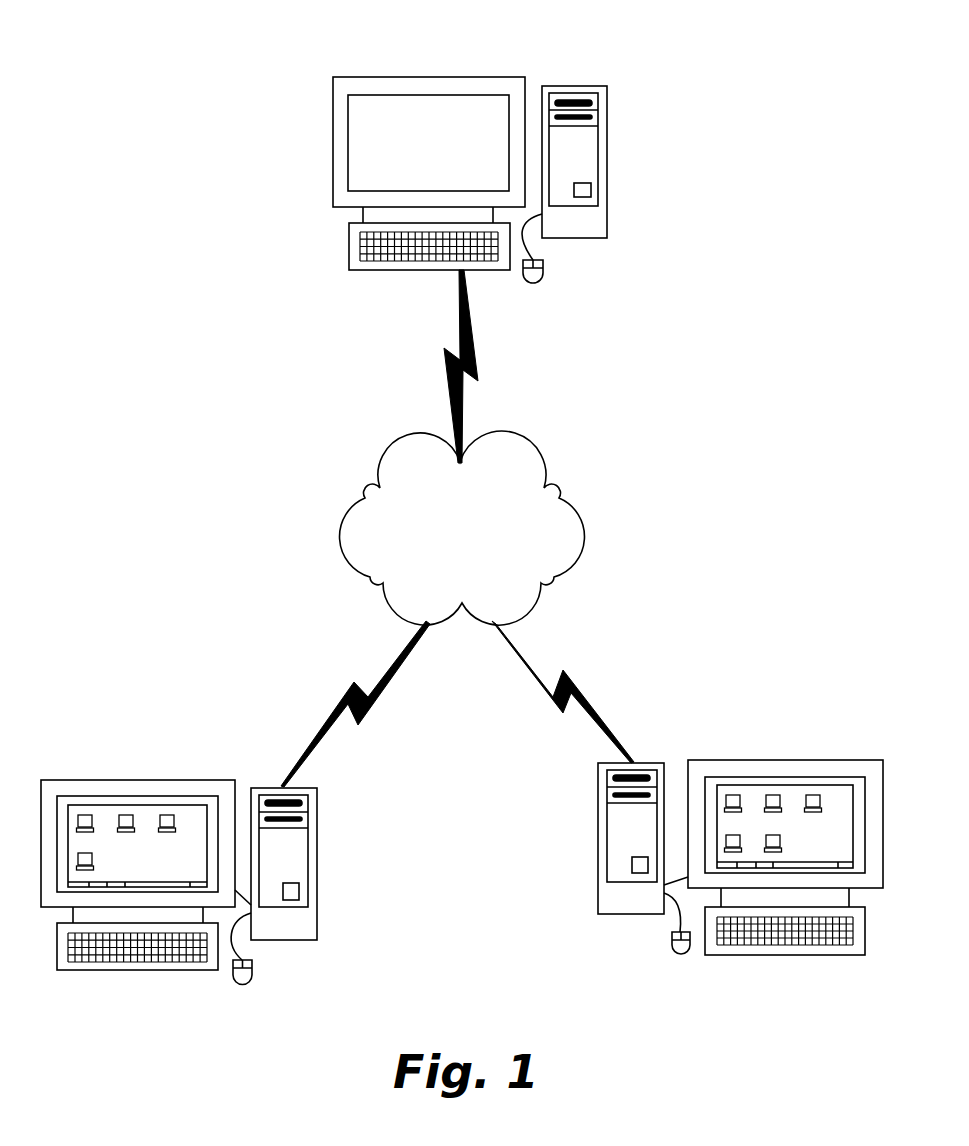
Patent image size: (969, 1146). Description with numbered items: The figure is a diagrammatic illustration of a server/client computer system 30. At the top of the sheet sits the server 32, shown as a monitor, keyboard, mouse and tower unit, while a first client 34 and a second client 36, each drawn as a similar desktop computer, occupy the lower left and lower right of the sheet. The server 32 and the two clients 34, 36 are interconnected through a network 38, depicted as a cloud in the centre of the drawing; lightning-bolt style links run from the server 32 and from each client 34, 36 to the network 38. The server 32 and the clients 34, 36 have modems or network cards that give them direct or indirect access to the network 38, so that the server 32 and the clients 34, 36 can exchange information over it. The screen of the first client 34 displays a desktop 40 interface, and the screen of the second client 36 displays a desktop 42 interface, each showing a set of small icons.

The server/client computer system 30 is at (753, 271).
The server 32 is at (417, 52).
The first client 34 is at (179, 892).
The second client 36 is at (752, 874).
The network 38 is at (450, 558).
The desktop interface 40 is at (187, 812).
The desktop interface 42 is at (827, 787).